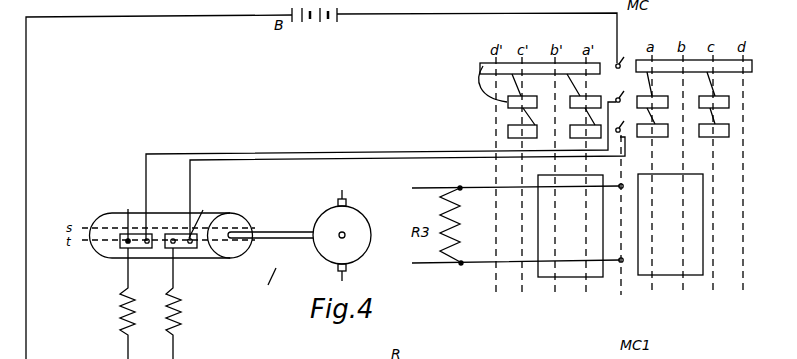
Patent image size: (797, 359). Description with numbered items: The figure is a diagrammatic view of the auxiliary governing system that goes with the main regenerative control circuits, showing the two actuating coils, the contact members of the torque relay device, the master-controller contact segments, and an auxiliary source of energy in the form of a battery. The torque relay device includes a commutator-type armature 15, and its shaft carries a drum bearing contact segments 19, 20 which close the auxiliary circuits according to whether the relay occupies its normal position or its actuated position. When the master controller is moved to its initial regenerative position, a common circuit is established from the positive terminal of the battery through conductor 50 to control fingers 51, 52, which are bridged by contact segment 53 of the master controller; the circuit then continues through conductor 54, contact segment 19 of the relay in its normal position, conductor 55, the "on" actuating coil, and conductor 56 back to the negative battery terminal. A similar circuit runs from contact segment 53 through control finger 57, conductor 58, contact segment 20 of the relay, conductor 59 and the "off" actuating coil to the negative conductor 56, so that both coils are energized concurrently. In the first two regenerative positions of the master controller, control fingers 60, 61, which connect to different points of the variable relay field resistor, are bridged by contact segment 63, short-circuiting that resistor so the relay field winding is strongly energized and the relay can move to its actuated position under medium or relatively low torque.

The conductor 56 is at (159, 179).
The conductor 50 is at (412, 16).
The contact segment 53 is at (481, 64).
The control finger 51 is at (684, 92).
The control finger 52 is at (627, 89).
The control finger 57 is at (627, 120).
The conductor 54 is at (470, 150).
The conductor 58 is at (403, 156).
The contact segment 19 is at (128, 219).
The contact segment 20 is at (202, 216).
The conductor 55 is at (128, 272).
The conductor 59 is at (175, 270).
The commutator-type armature 15 is at (362, 221).
The control finger 60 is at (613, 177).
The control finger 61 is at (613, 252).
The contact segment 63 is at (570, 226).